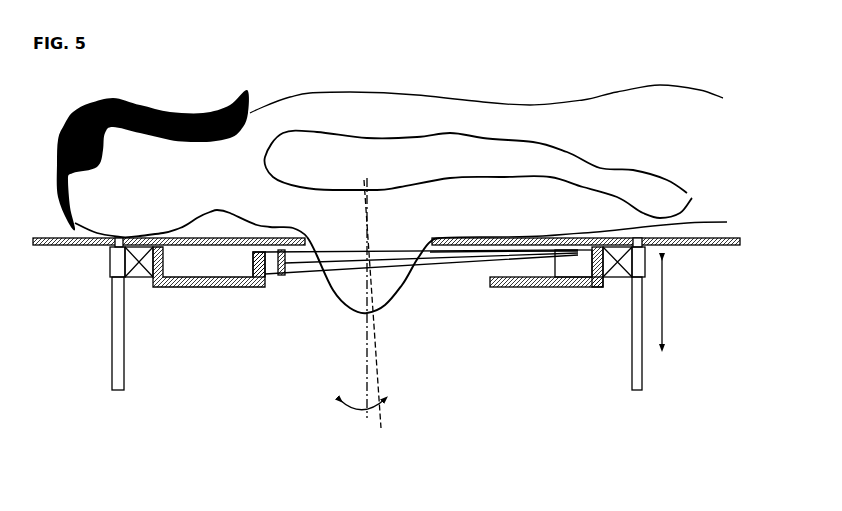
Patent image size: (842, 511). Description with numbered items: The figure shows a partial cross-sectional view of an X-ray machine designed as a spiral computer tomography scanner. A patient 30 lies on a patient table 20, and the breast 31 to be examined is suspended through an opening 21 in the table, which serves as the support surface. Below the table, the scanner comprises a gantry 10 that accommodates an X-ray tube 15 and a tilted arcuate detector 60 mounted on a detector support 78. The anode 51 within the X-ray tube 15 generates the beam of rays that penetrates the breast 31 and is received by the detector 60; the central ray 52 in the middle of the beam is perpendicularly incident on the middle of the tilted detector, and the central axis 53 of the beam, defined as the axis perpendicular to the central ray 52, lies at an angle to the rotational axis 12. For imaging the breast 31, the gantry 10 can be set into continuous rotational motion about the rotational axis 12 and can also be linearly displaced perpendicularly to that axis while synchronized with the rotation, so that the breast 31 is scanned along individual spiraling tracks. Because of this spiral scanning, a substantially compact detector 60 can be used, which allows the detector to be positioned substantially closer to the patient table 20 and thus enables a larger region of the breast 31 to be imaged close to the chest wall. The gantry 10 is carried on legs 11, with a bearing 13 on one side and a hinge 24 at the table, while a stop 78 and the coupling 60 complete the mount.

The gantry 10 is at (182, 288).
The legs 11 is at (118, 368).
The rotational axis 12 is at (368, 383).
The bearing 13 is at (137, 276).
The X-ray tube 15 is at (563, 272).
The patient table 20 is at (690, 252).
The opening 21 is at (422, 258).
The hinge 24 is at (117, 246).
The patient 30 is at (622, 142).
The breast 31 is at (385, 292).
The anode 51 is at (577, 253).
The central ray 52 is at (317, 262).
The central axis 53 is at (380, 430).
The tilted arcuate detector 60 is at (280, 274).
The detector support 78 is at (253, 279).